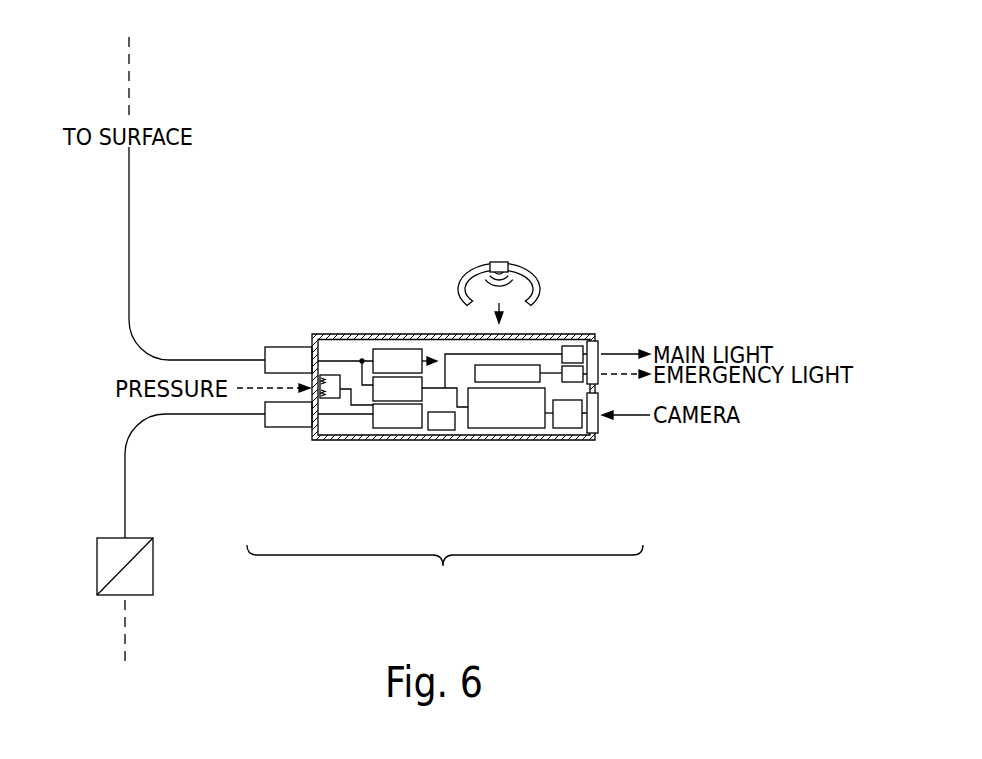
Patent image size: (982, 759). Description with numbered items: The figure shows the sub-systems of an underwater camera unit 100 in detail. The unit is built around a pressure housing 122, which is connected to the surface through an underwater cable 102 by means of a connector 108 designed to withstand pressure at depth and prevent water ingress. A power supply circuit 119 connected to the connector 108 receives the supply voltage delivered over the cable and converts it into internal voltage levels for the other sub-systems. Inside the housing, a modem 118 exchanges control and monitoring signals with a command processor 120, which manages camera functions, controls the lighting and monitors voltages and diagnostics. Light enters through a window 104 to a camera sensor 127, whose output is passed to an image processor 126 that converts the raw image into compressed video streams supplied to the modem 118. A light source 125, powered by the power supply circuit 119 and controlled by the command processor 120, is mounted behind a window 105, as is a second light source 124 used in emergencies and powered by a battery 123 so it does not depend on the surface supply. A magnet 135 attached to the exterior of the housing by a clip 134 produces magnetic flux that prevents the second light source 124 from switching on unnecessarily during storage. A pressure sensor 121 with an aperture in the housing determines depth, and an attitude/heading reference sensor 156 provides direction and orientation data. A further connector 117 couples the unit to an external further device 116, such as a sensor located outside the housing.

The underwater camera unit 100 is at (476, 407).
The underwater cable 102 is at (128, 225).
The window 104 is at (598, 428).
The window 105 is at (598, 343).
The connector 108 is at (275, 337).
The further device 116 is at (110, 538).
The further connector 117 is at (285, 428).
The modem 118 is at (402, 392).
The power supply circuit 119 is at (388, 348).
The command processor 120 is at (382, 422).
The pressure sensor 121 is at (323, 334).
The pressure housing 122 is at (412, 324).
The battery 123 is at (530, 370).
The second light source 124 is at (592, 346).
The light source 125 is at (577, 370).
The image processor 126 is at (517, 414).
The camera sensor 127 is at (568, 416).
The clip 134 is at (468, 268).
The magnet 135 is at (498, 262).
The attitude/heading reference sensor 156 is at (441, 446).